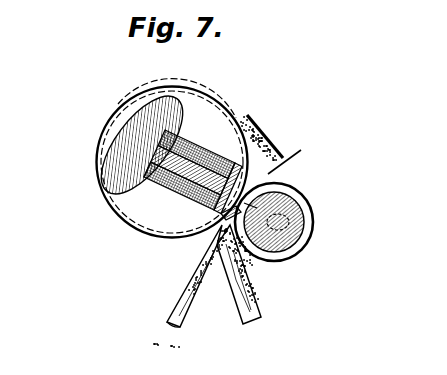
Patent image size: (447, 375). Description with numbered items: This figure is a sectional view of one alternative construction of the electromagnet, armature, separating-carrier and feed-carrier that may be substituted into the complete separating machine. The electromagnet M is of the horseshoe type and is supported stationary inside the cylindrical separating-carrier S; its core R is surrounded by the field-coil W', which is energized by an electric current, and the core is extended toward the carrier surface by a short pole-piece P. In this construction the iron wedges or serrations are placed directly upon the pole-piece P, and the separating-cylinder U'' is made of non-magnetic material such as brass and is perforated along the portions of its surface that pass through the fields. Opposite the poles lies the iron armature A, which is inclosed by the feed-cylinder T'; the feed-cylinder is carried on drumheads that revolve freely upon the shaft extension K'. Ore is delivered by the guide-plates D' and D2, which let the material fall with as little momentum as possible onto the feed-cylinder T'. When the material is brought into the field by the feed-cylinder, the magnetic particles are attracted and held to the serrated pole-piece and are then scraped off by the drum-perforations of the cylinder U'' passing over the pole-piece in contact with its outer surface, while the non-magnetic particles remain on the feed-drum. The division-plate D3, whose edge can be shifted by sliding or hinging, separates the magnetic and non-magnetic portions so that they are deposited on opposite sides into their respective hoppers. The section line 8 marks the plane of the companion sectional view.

The section line 8 is at (112, 130).
The electromagnet M is at (134, 101).
The separating-carrier cylinder S is at (98, 160).
The separating-cylinder U'' is at (177, 95).
The electromagnet core R is at (205, 138).
The pole-piece P is at (241, 173).
The field-coil W' is at (147, 189).
The guide-plate D' is at (265, 123).
The guide-plate D2 is at (290, 167).
The division-plate D3 is at (191, 276).
The armature A is at (294, 213).
The shaft extension K' is at (307, 224).
The feed-cylinder T' is at (259, 274).